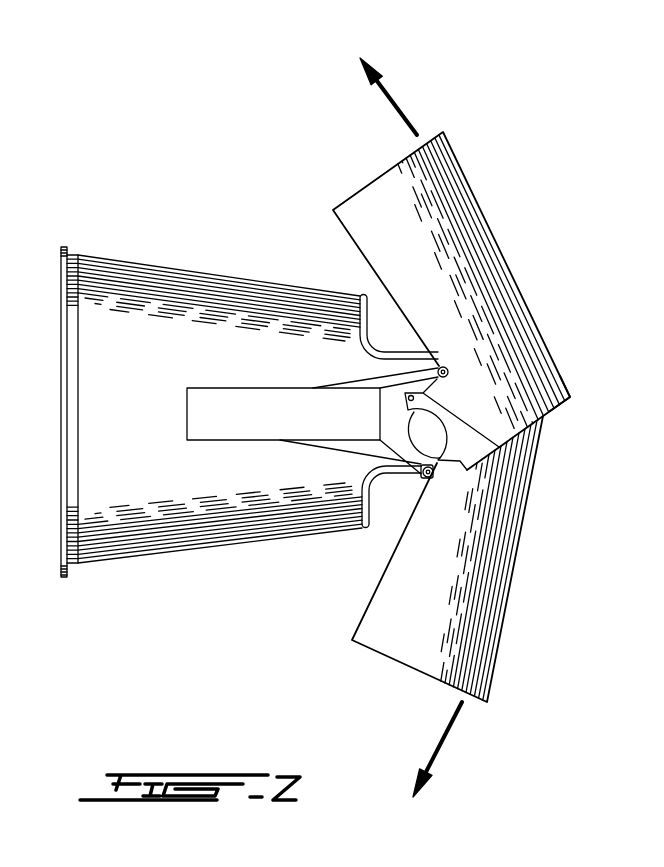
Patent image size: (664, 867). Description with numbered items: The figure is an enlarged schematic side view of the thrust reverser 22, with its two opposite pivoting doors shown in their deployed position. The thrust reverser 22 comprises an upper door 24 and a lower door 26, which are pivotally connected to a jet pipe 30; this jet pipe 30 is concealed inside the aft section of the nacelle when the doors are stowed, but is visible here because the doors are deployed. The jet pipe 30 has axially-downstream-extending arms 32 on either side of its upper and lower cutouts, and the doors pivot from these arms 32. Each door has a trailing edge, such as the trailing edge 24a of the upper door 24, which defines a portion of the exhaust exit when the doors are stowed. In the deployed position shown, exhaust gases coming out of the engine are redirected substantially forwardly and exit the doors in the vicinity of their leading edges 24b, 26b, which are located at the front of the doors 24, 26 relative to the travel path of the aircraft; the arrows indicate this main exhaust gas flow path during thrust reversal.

The thrust reverser 22 is at (208, 143).
The upper door 24 is at (455, 168).
The trailing edge of upper door 24a is at (570, 397).
The leading edge of upper door 24b is at (440, 133).
The lower door 26 is at (493, 603).
The leading edge of lower door 26b is at (478, 703).
The jet pipe 30 is at (128, 327).
The arms 32 is at (405, 367).